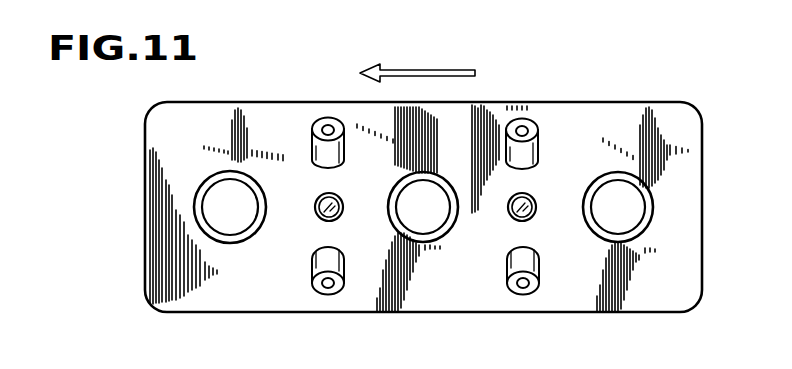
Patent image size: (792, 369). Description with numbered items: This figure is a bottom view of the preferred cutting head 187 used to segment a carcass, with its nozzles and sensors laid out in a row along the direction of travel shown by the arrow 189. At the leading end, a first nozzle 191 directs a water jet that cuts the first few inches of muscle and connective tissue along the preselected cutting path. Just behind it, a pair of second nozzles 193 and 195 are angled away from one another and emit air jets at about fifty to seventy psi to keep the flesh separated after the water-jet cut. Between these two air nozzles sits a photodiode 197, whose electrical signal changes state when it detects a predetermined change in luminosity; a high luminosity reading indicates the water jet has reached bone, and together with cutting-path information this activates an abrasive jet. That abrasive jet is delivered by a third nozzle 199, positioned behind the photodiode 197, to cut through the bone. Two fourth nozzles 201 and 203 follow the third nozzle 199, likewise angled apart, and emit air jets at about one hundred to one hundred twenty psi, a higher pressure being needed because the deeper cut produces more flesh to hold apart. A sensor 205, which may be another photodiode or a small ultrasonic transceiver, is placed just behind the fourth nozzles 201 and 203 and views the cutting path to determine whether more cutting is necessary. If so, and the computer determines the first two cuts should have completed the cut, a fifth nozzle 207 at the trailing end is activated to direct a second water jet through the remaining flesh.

The cutting head 187 is at (145, 288).
The arrow 189 is at (428, 70).
The first nozzle 191 is at (197, 219).
The second nozzle 193 is at (318, 116).
The second nozzle 195 is at (313, 291).
The photodiode 197 is at (317, 197).
The third nozzle 199 is at (447, 180).
The fourth nozzle 201 is at (538, 126).
The fourth nozzle 203 is at (538, 291).
The sensor 205 is at (538, 200).
The fifth nozzle 207 is at (655, 211).